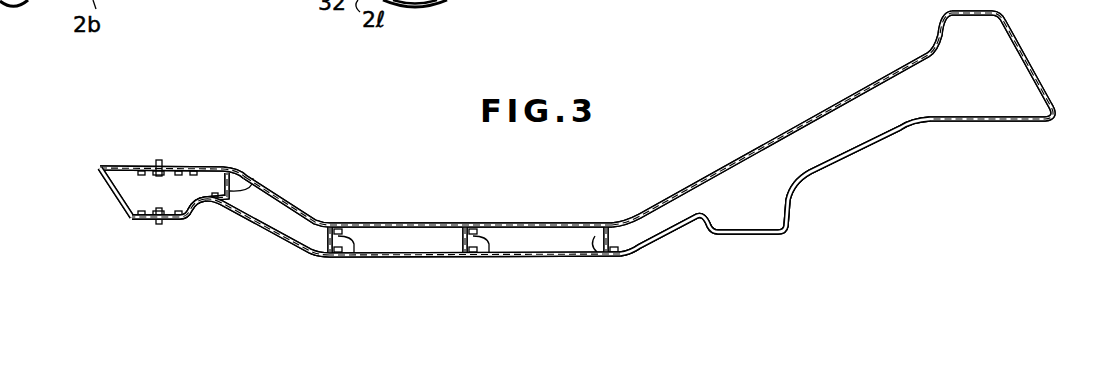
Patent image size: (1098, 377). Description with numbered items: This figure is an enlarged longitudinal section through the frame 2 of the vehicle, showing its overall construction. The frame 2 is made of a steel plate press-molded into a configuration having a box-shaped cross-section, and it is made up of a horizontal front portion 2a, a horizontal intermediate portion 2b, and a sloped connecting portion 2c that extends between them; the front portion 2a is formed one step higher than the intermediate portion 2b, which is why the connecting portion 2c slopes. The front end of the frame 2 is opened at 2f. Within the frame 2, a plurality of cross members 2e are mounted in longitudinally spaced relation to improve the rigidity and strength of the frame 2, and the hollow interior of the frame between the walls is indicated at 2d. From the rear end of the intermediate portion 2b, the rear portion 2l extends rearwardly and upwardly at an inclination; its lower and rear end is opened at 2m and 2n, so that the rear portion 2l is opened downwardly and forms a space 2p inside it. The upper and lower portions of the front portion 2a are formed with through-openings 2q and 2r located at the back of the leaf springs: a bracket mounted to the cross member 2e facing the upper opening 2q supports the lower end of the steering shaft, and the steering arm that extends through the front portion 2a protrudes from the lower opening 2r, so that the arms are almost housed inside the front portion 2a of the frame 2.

The frame 2 is at (390, 221).
The horizontal front portion 2a is at (131, 165).
The horizontal intermediate portion 2b is at (457, 222).
The sloped connecting portion 2c is at (278, 197).
The hollow cavity 2d is at (422, 222).
The cross member 2e is at (253, 188).
The front end opening 2f is at (123, 193).
The rear portion 2l is at (845, 104).
The lower opening of rear portion 2m is at (1024, 54).
The rear end opening of rear portion 2n is at (905, 126).
The space 2p is at (946, 84).
The through-opening in upper portion 2q is at (192, 167).
The through-opening in lower portion 2r is at (196, 212).